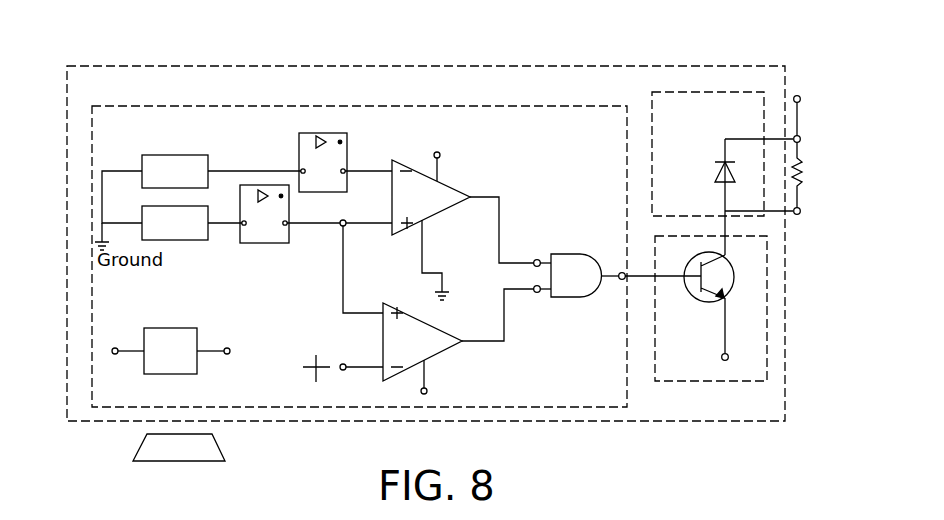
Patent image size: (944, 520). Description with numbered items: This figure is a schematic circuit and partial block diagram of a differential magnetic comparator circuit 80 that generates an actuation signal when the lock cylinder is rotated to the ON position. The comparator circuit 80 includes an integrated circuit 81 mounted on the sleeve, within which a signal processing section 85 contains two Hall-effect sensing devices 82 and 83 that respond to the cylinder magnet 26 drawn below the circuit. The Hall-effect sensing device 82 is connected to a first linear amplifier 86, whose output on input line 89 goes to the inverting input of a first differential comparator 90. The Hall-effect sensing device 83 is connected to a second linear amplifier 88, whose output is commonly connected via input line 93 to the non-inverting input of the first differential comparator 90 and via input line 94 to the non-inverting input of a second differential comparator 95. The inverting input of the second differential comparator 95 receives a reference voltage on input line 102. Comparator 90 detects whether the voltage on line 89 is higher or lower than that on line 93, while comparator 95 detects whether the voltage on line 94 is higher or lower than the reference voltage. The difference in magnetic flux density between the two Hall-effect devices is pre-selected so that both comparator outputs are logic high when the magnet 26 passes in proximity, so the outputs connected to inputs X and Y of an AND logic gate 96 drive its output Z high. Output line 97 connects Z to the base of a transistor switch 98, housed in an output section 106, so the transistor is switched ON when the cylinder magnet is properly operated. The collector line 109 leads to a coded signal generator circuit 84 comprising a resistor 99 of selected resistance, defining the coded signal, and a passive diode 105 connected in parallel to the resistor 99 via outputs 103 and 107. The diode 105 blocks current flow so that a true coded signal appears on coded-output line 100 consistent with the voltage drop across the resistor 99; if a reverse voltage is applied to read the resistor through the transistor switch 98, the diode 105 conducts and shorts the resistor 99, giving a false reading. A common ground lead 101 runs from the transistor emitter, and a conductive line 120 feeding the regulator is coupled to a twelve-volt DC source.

The differential magnetic comparator circuit 80 is at (337, 21).
The integrated circuit 81 is at (545, 65).
The signal processing section 85 is at (485, 105).
The coded signal generator circuit 84 is at (652, 118).
The output transistor section 106 is at (708, 383).
The Hall-effect sensing device 82 is at (168, 161).
The Hall-effect sensing device 83 is at (182, 235).
The first linear amplifier 86 is at (304, 138).
The second linear amplifier 88 is at (272, 232).
The input line 89 is at (371, 169).
The input line 93 is at (383, 220).
The input line 94 is at (345, 256).
The first differential comparator 90 is at (444, 189).
The second differential comparator 95 is at (444, 336).
The AND logic gate 96 is at (578, 263).
The AND gate output line 97 is at (642, 274).
The transistor switch 98 is at (700, 290).
The resistor 99 is at (801, 170).
The coded-output line 100 is at (800, 107).
The output 107 is at (801, 138).
The output 103 is at (801, 212).
The passive diode 105 is at (716, 172).
The collector line 109 is at (727, 233).
The common ground lead 101 is at (730, 357).
The input line 102 is at (339, 371).
The conductive line 120 is at (112, 351).
The magnet 26 is at (200, 447).